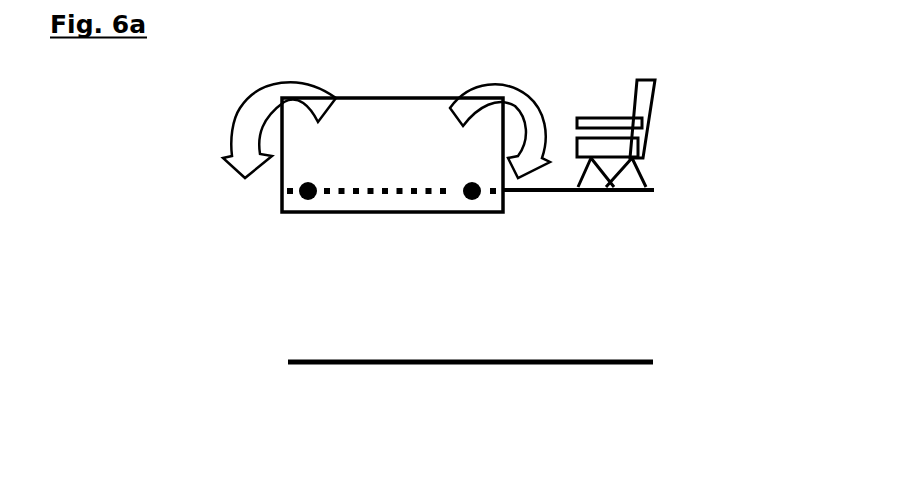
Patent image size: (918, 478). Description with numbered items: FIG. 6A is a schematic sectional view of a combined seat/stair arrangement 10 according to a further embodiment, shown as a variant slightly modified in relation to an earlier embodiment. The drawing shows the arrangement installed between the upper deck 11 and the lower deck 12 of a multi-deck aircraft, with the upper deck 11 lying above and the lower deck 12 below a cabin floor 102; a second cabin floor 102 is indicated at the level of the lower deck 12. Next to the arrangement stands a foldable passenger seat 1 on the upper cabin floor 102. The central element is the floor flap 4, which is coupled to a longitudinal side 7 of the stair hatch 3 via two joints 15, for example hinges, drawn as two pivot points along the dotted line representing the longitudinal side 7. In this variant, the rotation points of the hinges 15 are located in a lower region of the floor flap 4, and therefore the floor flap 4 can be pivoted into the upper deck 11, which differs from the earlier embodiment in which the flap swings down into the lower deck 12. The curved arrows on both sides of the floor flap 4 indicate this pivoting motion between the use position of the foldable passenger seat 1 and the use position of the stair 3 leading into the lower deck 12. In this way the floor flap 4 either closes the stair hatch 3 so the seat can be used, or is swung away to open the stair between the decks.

The foldable passenger seat 1 is at (646, 79).
The stair hatch 3 is at (404, 182).
The floor flap 4 is at (406, 97).
The longitudinal side 7 is at (356, 187).
The combined seat/stair arrangement 10 is at (272, 304).
The upper deck 11 is at (584, 102).
The lower deck 12 is at (580, 322).
The joint 15 is at (474, 200).
The cabin floor 102 is at (623, 194).